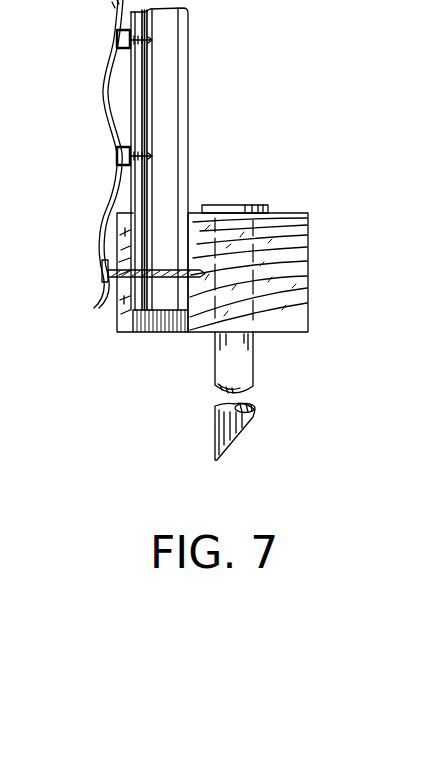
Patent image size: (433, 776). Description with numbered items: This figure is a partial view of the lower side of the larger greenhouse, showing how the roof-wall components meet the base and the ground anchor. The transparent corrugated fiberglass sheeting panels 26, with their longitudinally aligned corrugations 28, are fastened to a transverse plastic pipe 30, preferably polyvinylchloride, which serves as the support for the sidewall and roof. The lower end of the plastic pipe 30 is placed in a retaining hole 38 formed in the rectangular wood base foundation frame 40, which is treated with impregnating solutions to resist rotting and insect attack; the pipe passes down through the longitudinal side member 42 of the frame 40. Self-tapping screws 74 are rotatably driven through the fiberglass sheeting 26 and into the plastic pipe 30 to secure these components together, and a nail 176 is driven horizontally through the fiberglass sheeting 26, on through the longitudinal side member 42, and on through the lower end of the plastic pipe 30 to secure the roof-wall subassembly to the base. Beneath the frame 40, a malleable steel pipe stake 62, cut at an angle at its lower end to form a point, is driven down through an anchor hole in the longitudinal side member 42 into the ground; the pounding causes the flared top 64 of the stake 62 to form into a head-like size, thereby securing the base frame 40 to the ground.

The corrugated fiberglass sheeting panels 26 is at (103, 88).
The longitudinally aligned corrugations 28 is at (112, 227).
The plastic pipe 30 is at (190, 78).
The retaining hole 38 is at (187, 330).
The wood base foundation frame 40 is at (275, 259).
The longitudinal side member 42 is at (335, 201).
The steel pipe stake 62 is at (255, 363).
The flared top 64 is at (265, 205).
The self-tapping screw 74 is at (115, 39).
The nail 176 is at (102, 272).